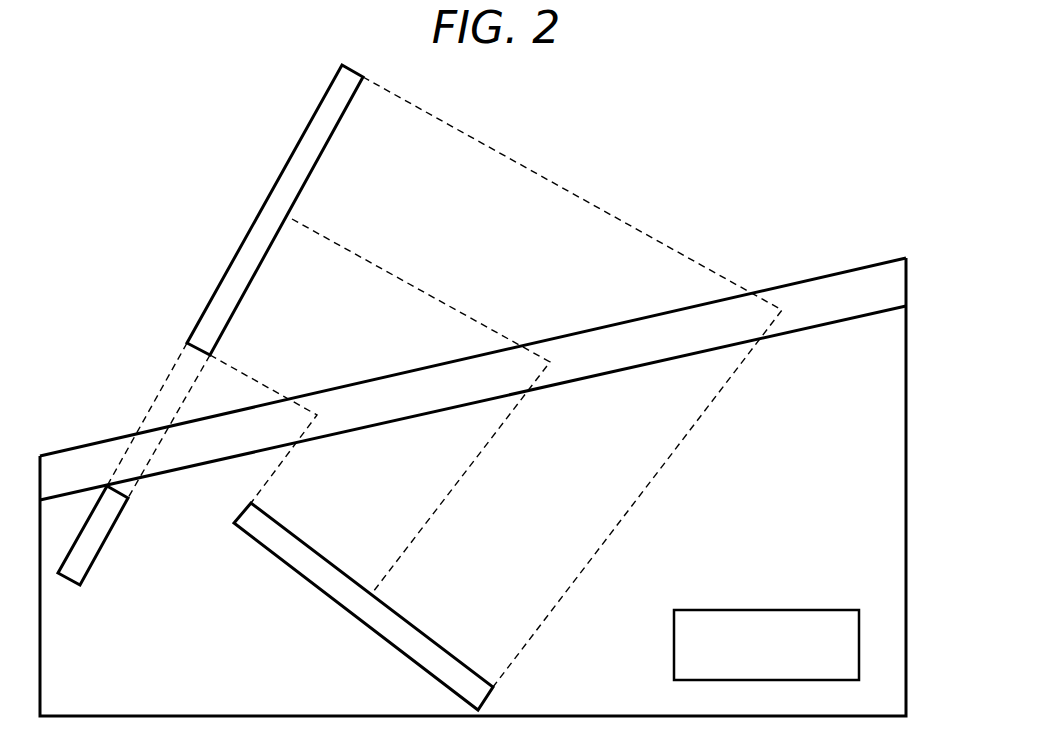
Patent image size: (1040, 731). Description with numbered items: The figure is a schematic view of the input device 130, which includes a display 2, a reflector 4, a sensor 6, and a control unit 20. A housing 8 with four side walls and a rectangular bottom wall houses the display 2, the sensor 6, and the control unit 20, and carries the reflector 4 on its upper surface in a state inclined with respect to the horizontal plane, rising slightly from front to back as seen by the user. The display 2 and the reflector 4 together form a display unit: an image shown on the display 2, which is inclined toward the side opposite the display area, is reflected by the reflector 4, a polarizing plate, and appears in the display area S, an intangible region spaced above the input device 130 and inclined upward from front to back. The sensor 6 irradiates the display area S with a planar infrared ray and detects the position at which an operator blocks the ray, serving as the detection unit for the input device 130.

The input device 130 is at (793, 124).
The housing 8 is at (907, 487).
The reflector 4 is at (838, 282).
The display area S is at (233, 250).
The sensor 6 is at (97, 545).
The display 2 is at (307, 568).
The control unit 20 is at (767, 608).